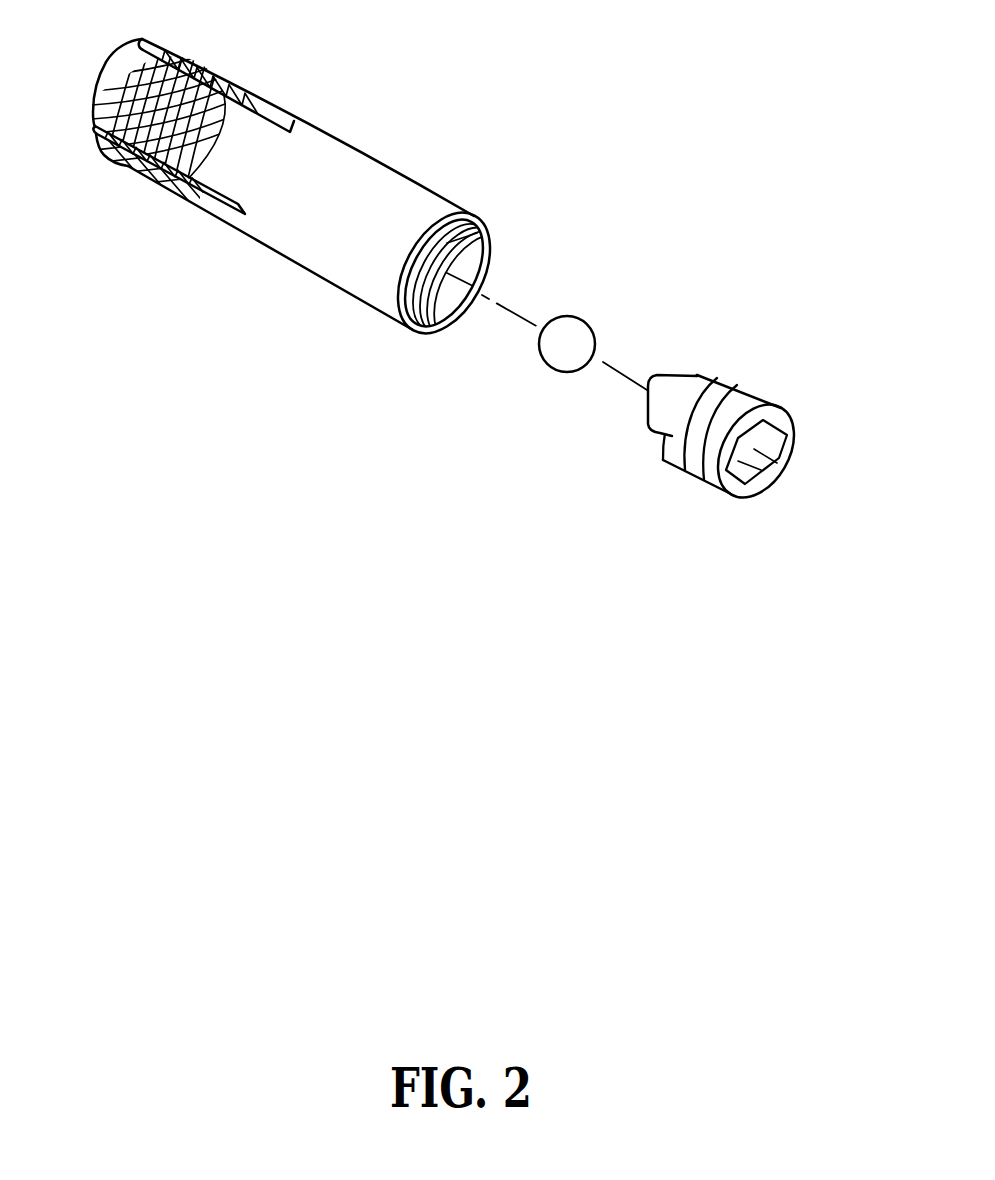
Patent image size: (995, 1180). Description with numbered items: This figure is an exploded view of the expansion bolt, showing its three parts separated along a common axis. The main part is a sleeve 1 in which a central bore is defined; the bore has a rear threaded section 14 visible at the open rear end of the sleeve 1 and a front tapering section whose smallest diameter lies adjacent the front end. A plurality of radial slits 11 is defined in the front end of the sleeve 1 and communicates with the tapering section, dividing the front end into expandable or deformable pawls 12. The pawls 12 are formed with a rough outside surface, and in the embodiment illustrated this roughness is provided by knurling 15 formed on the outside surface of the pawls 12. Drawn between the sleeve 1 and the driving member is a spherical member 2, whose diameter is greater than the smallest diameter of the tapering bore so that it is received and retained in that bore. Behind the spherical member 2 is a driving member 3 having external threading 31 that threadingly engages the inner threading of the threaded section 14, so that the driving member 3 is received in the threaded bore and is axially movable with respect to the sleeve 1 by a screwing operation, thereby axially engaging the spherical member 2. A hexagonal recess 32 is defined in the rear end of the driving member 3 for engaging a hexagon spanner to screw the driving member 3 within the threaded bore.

The sleeve 1 is at (331, 209).
The slot 11 is at (230, 205).
The pawls 12 is at (105, 103).
The threaded section 14 is at (483, 232).
The knurling 15 is at (157, 137).
The spherical member 2 is at (571, 342).
The driving member 3 is at (775, 392).
The external threading 31 is at (717, 373).
The hexagonal recess 32 is at (788, 463).